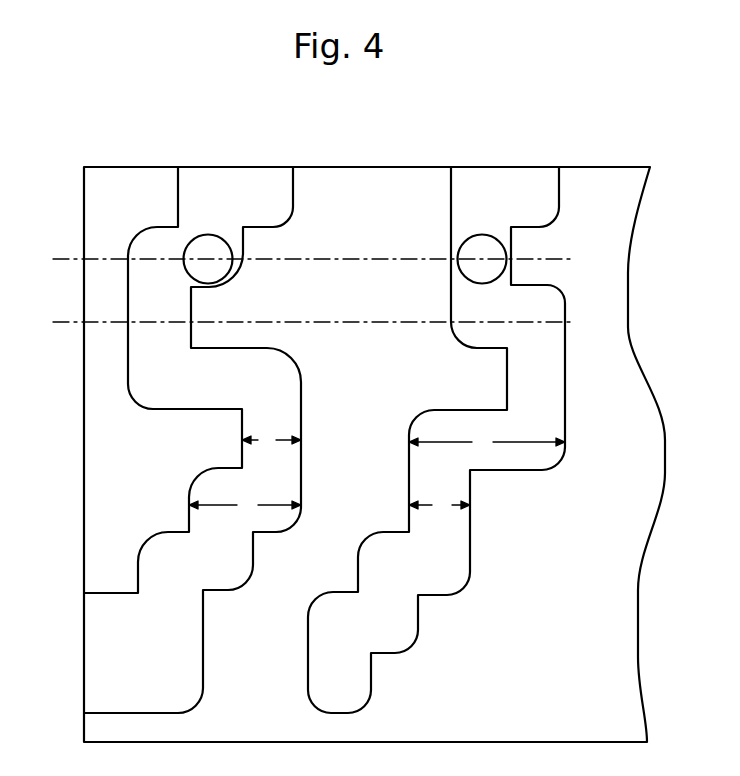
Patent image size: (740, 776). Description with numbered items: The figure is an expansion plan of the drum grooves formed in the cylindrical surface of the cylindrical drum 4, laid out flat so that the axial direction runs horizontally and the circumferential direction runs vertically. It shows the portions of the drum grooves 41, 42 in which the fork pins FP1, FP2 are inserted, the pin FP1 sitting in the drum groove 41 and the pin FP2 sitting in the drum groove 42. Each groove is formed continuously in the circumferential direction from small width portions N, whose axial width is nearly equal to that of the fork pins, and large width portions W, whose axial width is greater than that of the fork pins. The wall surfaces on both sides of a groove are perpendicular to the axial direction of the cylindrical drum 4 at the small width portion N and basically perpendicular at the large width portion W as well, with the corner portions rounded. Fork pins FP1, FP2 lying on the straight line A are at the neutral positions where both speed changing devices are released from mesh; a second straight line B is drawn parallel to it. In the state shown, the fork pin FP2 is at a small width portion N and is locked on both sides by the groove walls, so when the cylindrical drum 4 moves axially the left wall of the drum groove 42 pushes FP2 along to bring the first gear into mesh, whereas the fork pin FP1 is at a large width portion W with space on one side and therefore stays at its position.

The cylindrical drum 4 is at (368, 166).
The drum groove 41 is at (302, 408).
The drum groove 42 is at (565, 387).
The fork pin FP1 is at (210, 242).
The fork pin FP2 is at (483, 242).
The straight line A is at (304, 260).
The straight line B is at (304, 322).
The small width portion N is at (356, 473).
The large width portion W is at (377, 474).